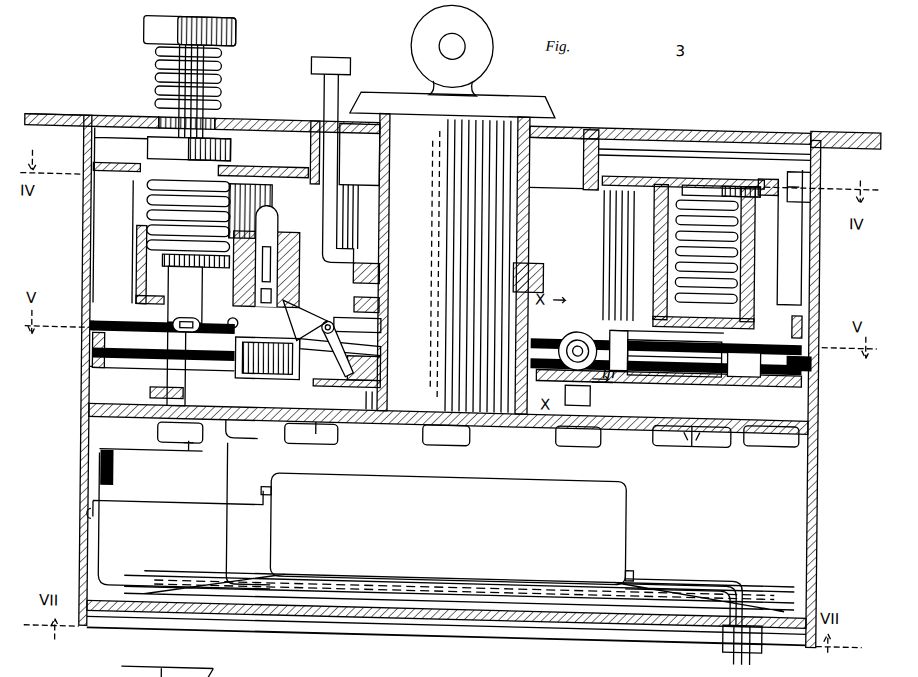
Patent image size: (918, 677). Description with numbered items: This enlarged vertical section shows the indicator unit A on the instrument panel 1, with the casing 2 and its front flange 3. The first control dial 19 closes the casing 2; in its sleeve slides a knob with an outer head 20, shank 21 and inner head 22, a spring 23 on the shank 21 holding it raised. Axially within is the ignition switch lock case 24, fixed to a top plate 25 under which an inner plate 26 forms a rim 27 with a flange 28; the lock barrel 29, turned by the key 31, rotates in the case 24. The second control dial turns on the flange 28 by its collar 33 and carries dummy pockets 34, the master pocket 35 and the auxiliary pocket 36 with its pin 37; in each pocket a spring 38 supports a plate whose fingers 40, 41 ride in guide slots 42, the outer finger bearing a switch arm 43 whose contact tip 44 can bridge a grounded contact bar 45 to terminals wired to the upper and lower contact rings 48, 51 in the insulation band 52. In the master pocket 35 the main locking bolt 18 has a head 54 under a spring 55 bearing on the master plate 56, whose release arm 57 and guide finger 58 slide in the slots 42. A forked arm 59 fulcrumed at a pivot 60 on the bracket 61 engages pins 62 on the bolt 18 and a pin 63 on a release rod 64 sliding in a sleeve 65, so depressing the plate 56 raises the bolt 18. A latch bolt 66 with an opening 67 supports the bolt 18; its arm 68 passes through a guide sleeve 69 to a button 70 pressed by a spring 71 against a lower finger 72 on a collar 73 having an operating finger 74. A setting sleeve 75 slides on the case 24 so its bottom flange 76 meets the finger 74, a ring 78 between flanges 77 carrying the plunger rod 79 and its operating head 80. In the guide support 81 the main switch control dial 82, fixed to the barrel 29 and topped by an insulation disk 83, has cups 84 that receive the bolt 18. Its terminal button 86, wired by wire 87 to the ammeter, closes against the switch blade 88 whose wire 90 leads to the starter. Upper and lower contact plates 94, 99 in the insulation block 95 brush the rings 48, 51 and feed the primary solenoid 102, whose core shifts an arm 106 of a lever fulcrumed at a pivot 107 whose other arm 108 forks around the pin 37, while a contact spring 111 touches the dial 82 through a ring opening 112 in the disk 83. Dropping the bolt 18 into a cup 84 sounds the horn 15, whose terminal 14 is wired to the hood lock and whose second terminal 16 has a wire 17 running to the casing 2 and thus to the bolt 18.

The instrument panel 1 is at (71, 128).
The indicator casing 2 is at (84, 469).
The front flange 3 is at (57, 112).
The horn terminal 14 is at (640, 556).
The horn 15 is at (459, 540).
The second horn terminal 16 is at (272, 486).
The wire 17 is at (192, 503).
The main locking bolt 18 is at (243, 371).
The first control dial 19 is at (124, 112).
The outer head 20 is at (144, 22).
The shank 21 is at (216, 70).
The inner head 22 is at (250, 118).
The coiled spring 23 is at (221, 95).
The ignition switch lock case 24 is at (453, 264).
The top plate 25 is at (553, 100).
The inner stationary plate 26 is at (588, 114).
The circular rim 27 is at (582, 159).
The flange 28 is at (597, 184).
The switch lock barrel 29 is at (700, 169).
The key 31 is at (488, 44).
The collar 33 is at (607, 128).
The dummy pockets 34 is at (358, 214).
The master pocket 35 is at (160, 256).
The auxiliary control pocket 36 is at (676, 248).
The pin 37 is at (710, 356).
The coiled spring 38 is at (752, 251).
The inner guide finger 40 is at (661, 176).
The outer guide finger 41 is at (774, 168).
The guide slots 42 is at (274, 196).
The contact arm 43 is at (140, 236).
The contact tip 44 is at (98, 317).
The grounded contact bar 45 is at (100, 322).
The upper contact ring 48 is at (100, 364).
The lower contact ring 51 is at (128, 357).
The insulation band 52 is at (95, 350).
The bolt head 54 is at (163, 262).
The coiled spring 55 is at (150, 216).
The master plate 56 is at (229, 163).
The release operating arm 57 is at (262, 165).
The guide finger 58 is at (122, 166).
The forked arm 59 is at (166, 372).
The fulcrum 60 is at (235, 312).
The supporting bracket 61 is at (297, 301).
The pins 62 is at (176, 319).
The pin 63 is at (284, 266).
The release rod 64 is at (282, 217).
The sleeve 65 is at (284, 242).
The latch bolt 66 is at (291, 424).
The opening 67 is at (250, 414).
The arm 68 is at (323, 426).
The guide sleeve 69 is at (372, 392).
The button 70 is at (384, 374).
The coiled spring 71 is at (283, 328).
The lower finger 72 is at (384, 354).
The collar 73 is at (384, 338).
The operating finger 74 is at (384, 313).
The sleeve 75 is at (382, 140).
The bottom flange 76 is at (383, 290).
The spaced flanges 77 is at (381, 252).
The ring 78 is at (546, 262).
The plunger rod 79 is at (342, 90).
The operating head 80 is at (340, 52).
The guide support 81 is at (812, 425).
The main switch control dial 82 is at (440, 434).
The insulation cover disk 83 is at (385, 410).
The cups 84 is at (682, 430).
The terminal button 86 is at (193, 442).
The wire 87 is at (233, 546).
The main switch blade 88 is at (146, 445).
The wire 90 is at (137, 541).
The upper contact plate 94 is at (757, 359).
The insulation block 95 is at (725, 360).
The lower contact plate 99 is at (783, 352).
The primary solenoid 102 is at (582, 317).
The arm 106 is at (617, 367).
The fulcrum 107 is at (621, 314).
The arm 108 is at (668, 359).
The contact spring 111 is at (602, 382).
The ring opening 112 is at (611, 415).
The indicator unit A is at (794, 113).